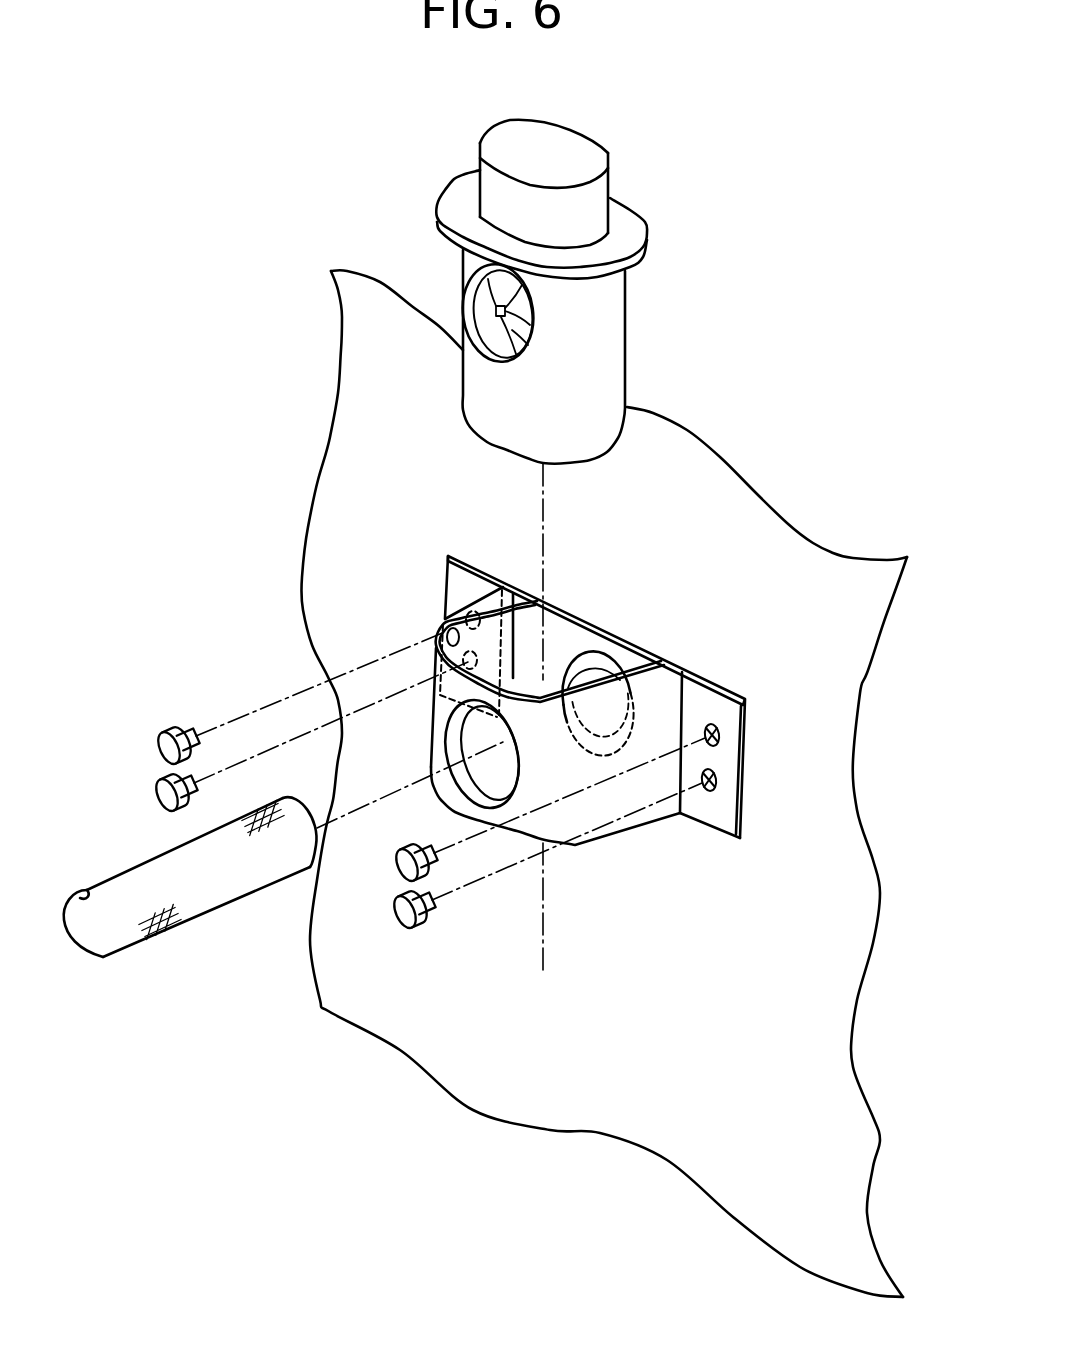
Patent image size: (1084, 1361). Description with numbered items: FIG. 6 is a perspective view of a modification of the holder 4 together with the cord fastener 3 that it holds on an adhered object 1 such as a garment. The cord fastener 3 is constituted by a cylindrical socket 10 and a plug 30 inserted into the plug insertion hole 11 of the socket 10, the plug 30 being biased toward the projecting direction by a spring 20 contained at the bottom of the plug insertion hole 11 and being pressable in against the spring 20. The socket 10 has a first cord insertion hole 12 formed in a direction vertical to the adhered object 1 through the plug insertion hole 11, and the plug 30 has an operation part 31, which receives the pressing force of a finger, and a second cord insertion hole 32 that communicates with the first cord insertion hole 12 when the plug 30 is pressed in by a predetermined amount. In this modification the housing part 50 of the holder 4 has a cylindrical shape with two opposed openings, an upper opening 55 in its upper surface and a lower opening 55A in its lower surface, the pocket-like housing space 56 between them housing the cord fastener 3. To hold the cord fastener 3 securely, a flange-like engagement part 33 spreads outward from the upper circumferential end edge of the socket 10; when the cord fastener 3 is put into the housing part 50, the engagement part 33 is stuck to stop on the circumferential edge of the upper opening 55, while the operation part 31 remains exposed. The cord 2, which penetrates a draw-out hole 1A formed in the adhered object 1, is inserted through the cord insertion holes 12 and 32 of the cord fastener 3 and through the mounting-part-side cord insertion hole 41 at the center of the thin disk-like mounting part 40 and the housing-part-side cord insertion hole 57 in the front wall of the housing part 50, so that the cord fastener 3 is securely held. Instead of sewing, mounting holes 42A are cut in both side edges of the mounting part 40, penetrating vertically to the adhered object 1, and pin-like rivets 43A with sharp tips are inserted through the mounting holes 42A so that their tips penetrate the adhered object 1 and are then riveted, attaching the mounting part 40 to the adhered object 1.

The adhered object 1 is at (827, 573).
The draw-out hole 1A is at (620, 676).
The cord 2 is at (122, 945).
The cord fastener 3 is at (582, 545).
The socket 10 is at (607, 330).
The plug insertion hole 11 is at (500, 332).
The first cord insertion hole 12 is at (475, 308).
The spring 20 is at (500, 362).
The plug 30 is at (593, 193).
The operation part 31 is at (575, 136).
The second cord insertion hole 32 is at (477, 281).
The engagement part 33 is at (623, 235).
The holder 4 is at (491, 756).
The mounting part 40 is at (566, 626).
The mounting-part-side cord insertion hole 41 is at (601, 662).
The mounting holes 42A is at (717, 779).
The rivets 43A is at (440, 910).
The housing part 50 is at (671, 708).
The upper opening 55 is at (540, 603).
The lower opening 55A is at (590, 842).
The housing space 56 is at (443, 622).
The housing-part-side cord insertion hole 57 is at (468, 782).